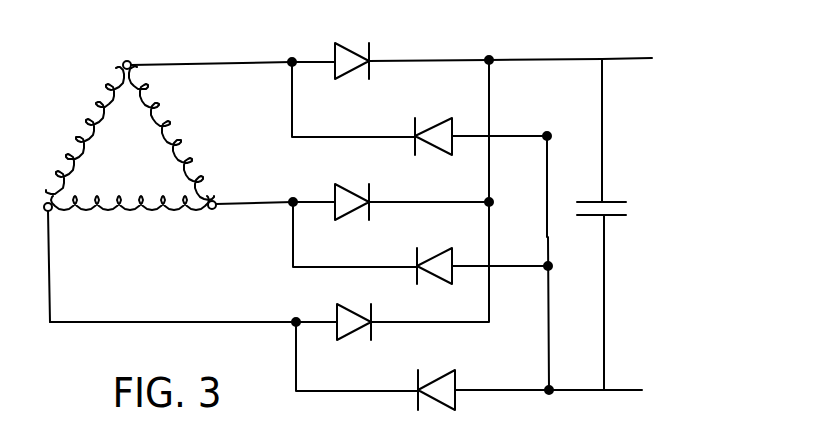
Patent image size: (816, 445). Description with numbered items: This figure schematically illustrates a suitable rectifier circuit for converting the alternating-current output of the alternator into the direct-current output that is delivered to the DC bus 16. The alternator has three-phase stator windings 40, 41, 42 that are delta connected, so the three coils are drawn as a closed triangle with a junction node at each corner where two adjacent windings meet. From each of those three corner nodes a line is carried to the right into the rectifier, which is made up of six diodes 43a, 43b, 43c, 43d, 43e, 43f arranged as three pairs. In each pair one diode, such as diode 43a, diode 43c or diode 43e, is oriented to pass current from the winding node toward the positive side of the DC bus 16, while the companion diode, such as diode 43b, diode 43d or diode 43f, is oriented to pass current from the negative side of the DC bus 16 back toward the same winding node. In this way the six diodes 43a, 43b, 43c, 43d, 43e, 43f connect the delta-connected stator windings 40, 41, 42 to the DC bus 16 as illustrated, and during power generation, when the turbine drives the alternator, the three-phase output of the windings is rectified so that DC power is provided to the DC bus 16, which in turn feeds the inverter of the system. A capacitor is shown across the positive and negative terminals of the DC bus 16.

The DC bus 16 is at (637, 58).
The stator winding 40 is at (88, 110).
The stator winding 41 is at (138, 208).
The stator winding 42 is at (185, 128).
The diode 43a is at (355, 46).
The diode 43b is at (437, 120).
The diode 43c is at (334, 190).
The diode 43d is at (437, 252).
The diode 43e is at (337, 312).
The diode 43f is at (458, 372).